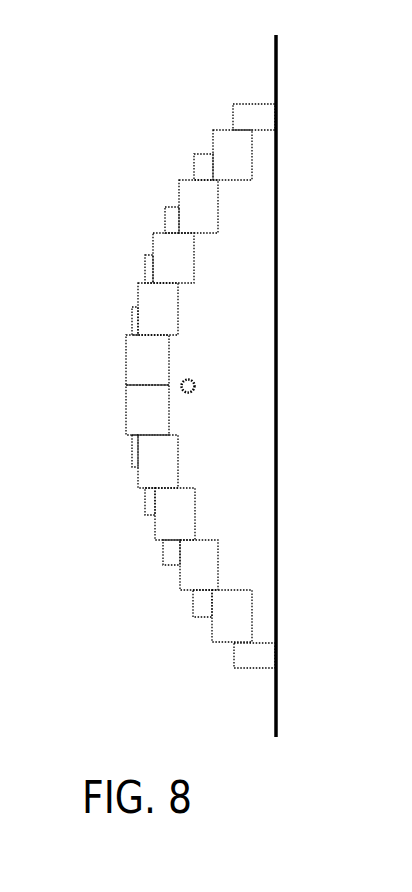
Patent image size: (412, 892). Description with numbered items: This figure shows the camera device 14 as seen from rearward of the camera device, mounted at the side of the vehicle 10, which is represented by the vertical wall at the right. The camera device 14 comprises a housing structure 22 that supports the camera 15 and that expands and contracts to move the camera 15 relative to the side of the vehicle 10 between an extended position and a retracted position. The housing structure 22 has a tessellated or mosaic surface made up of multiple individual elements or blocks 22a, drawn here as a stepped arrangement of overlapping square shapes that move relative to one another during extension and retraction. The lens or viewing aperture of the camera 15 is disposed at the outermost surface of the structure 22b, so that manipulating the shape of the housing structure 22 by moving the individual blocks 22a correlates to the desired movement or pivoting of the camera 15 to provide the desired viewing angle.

The vehicle 10 is at (277, 700).
The camera device 14 is at (150, 148).
The camera 15 is at (182, 382).
The housing structure 22 is at (130, 278).
The blocks 22a is at (180, 510).
The outermost surface of the structure 22b is at (258, 260).